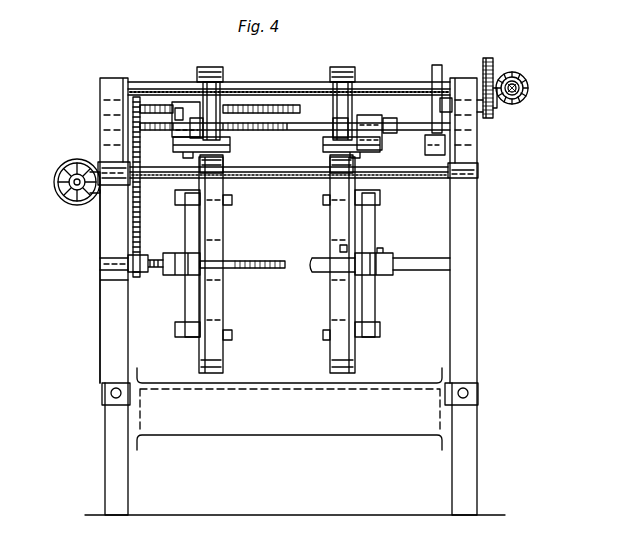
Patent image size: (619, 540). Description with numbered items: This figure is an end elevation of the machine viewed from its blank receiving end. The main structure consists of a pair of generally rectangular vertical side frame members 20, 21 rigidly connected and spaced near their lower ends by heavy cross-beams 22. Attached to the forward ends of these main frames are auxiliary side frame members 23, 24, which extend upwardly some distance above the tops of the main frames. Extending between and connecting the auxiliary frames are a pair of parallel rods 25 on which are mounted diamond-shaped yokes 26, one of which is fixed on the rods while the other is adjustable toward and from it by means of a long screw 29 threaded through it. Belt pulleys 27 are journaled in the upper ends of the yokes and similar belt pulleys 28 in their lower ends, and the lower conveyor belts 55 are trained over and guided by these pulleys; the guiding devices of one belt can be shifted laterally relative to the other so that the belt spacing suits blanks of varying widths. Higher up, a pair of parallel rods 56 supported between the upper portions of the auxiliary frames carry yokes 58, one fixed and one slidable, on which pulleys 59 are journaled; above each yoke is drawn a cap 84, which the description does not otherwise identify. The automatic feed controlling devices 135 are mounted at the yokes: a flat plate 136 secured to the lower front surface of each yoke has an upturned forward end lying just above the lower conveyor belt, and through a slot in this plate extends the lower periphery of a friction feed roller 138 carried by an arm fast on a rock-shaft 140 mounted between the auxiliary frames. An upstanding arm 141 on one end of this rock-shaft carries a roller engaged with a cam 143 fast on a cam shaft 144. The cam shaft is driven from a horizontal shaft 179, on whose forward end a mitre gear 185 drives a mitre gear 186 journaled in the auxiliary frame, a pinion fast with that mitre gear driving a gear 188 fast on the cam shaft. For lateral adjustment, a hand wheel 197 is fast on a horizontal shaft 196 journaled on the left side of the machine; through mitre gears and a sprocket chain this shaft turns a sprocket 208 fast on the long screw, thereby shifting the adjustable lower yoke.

The main side frame member 20 is at (468, 332).
The main side frame member 21 is at (112, 323).
The cross-beam 22 is at (298, 427).
The auxiliary side frame member 23 is at (466, 197).
The auxiliary side frame member 24 is at (110, 220).
The parallel rod 25 is at (138, 262).
The diamond-shaped yoke 26 is at (365, 235).
The belt pulley 27 is at (330, 220).
The belt pulley 28 is at (330, 305).
The long screw 29 is at (246, 262).
The lower conveyor belt 55 is at (338, 248).
The parallel rod 56 is at (403, 124).
The yoke 58 is at (372, 114).
The pulley 59 is at (354, 80).
The cap 84 is at (342, 66).
The automatic feed controlling device 135 is at (279, 153).
The flat plate 136 is at (236, 160).
The friction feed roller 138 is at (315, 120).
The rock-shaft 140 is at (296, 162).
The upstanding arm 141 is at (430, 108).
The cam 143 is at (437, 66).
The cam shaft 144 is at (296, 86).
The shaft 179 is at (526, 86).
The mitre gear 185 is at (519, 76).
The mitre gear 186 is at (504, 73).
The gear 188 is at (485, 60).
The horizontal shaft 196 is at (58, 198).
The hand wheel 197 is at (62, 165).
The sprocket 208 is at (142, 278).